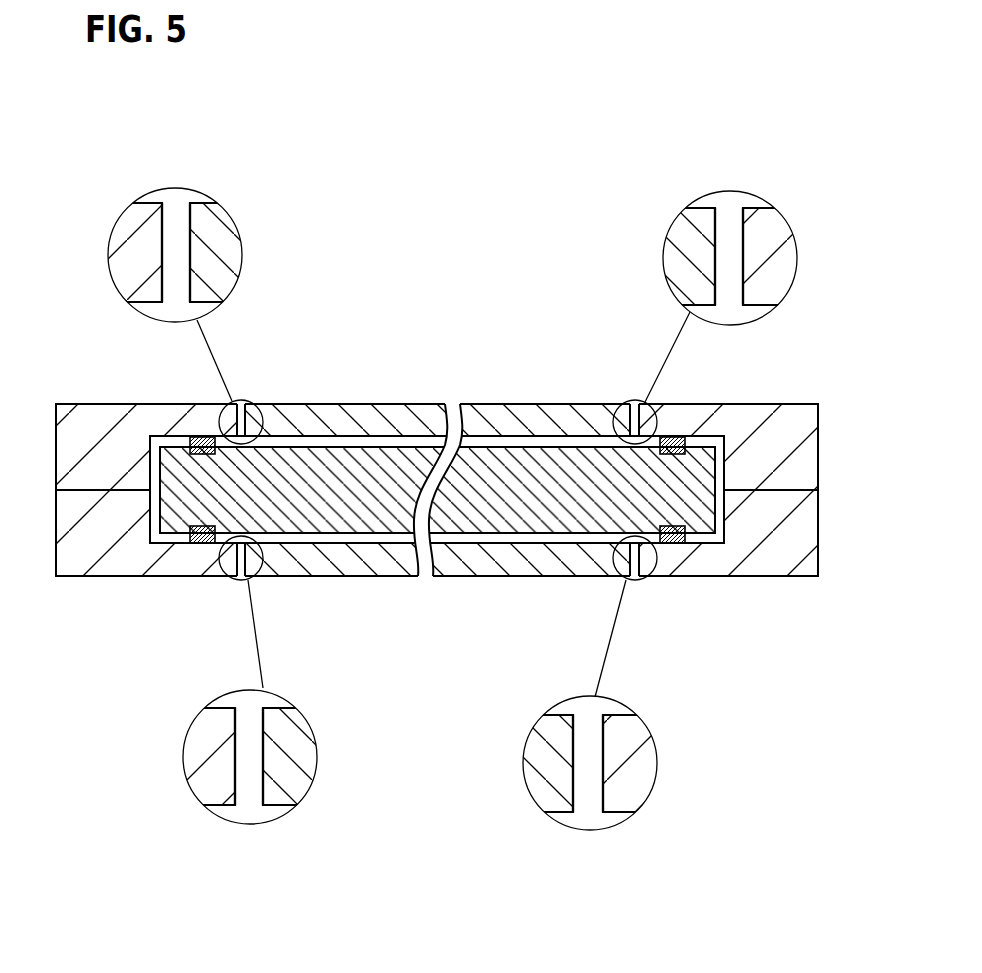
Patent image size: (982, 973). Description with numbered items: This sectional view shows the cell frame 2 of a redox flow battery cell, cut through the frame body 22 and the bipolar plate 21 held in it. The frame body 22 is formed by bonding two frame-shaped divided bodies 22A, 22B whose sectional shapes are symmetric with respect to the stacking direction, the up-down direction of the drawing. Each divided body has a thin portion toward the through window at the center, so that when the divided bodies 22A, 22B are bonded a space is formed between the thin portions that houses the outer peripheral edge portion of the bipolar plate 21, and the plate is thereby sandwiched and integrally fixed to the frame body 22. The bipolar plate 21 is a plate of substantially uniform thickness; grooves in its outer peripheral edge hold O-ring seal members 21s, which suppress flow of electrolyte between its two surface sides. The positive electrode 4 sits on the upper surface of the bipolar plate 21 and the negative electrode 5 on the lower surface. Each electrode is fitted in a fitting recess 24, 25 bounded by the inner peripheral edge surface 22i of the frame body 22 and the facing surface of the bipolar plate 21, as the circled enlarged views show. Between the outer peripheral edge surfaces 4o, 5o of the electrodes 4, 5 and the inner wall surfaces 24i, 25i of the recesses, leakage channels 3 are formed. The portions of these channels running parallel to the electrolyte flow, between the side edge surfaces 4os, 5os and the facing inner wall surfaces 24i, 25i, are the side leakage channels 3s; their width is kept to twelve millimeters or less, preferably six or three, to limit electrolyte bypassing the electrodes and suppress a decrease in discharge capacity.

The cell frame 2 is at (434, 418).
The bipolar plate 21 is at (326, 465).
The frame body 22 is at (434, 491).
The frame-shaped divided body 22A is at (93, 413).
The frame-shaped divided body 22B is at (95, 567).
The inner peripheral edge surface 22i is at (450, 506).
The fitting recess 24 is at (495, 430).
The inner wall surface 24i is at (168, 222).
The fitting recess 25 is at (497, 550).
The inner wall surface 25i is at (236, 787).
The positive electrode 4 is at (407, 420).
The outer peripheral edge surface 4o is at (183, 222).
The side edge surface 4os is at (453, 200).
The negative electrode 5 is at (383, 560).
The outer peripheral edge surface 5o is at (263, 787).
The side edge surface 5os is at (420, 819).
The leakage channel 3 is at (241, 403).
The side leakage channel 3s is at (440, 488).
The seal member 21s is at (200, 436).